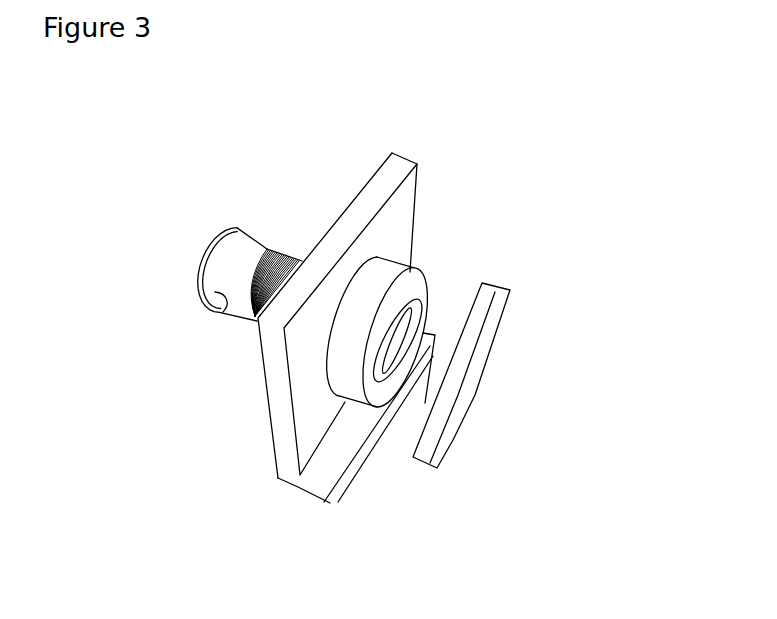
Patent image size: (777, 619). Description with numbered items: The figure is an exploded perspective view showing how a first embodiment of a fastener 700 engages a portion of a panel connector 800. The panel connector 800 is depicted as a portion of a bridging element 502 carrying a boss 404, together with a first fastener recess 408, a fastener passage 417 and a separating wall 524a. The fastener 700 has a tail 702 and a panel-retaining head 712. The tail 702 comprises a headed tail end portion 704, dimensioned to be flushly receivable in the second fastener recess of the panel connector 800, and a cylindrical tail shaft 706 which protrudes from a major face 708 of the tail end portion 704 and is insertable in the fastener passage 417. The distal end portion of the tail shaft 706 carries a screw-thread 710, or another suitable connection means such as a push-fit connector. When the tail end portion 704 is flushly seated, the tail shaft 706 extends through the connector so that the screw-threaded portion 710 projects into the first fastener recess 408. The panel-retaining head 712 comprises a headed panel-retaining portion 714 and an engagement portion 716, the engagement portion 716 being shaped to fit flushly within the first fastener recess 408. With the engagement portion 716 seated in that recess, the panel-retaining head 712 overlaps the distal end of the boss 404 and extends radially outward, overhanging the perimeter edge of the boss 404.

The fastener 700 is at (410, 571).
The panel connector 800 is at (433, 122).
The bridging element 502 is at (425, 193).
The separating wall 524a is at (331, 503).
The boss 404 is at (422, 263).
The first fastener recess 408 is at (398, 336).
The fastener passage 417 is at (410, 313).
The panel-retaining head 712 is at (495, 380).
The headed panel-retaining portion 714 is at (487, 356).
The engagement portion 716 is at (422, 401).
The tail 702 is at (203, 237).
The tail end portion 704 is at (233, 223).
The tail shaft 706 is at (267, 247).
The major face 708 is at (226, 302).
The screw-thread 710 is at (288, 259).